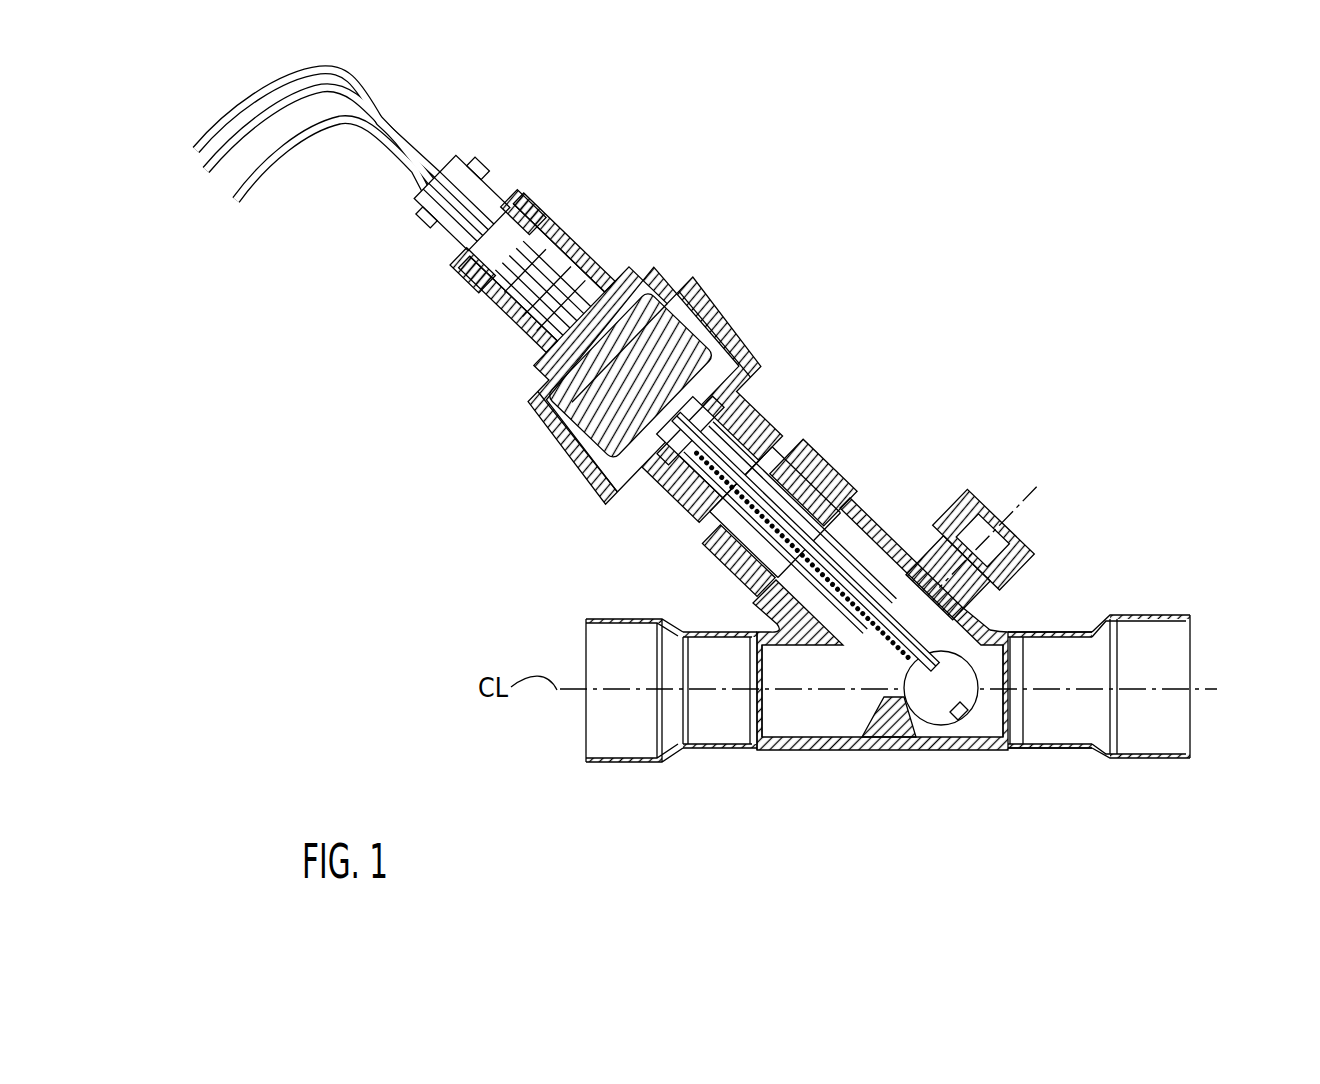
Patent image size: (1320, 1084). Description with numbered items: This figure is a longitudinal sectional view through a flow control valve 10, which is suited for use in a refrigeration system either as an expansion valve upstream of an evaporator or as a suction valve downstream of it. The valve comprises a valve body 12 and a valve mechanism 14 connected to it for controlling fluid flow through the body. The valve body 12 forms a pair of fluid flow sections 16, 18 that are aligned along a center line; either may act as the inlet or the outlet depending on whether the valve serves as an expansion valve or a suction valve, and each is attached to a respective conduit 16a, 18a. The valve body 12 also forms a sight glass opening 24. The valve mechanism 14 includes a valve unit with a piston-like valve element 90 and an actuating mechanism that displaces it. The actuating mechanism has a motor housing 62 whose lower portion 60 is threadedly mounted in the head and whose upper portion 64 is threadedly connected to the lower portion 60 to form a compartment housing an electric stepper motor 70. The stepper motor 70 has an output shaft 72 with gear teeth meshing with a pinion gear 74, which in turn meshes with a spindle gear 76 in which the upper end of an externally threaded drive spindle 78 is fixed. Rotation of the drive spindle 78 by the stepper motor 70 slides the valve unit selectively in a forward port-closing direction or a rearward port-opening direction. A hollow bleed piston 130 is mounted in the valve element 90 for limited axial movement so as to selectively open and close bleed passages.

The flow control valve 10 is at (868, 298).
The valve body 12 is at (895, 646).
The valve mechanism 14 is at (635, 416).
The flow section 16 is at (818, 713).
The conduit 16a is at (613, 633).
The flow section 18 is at (980, 727).
The conduit 18a is at (1175, 612).
The sight glass opening 24 is at (1030, 560).
The lower portion of motor housing 60 is at (758, 370).
The motor housing 62 is at (700, 288).
The upper portion of housing 64 is at (641, 285).
The electric stepper motor 70 is at (575, 407).
The output shaft 72 is at (605, 498).
The pinion gear 74 is at (748, 345).
The spindle gear 76 is at (672, 455).
The drive spindle 78 is at (822, 467).
The valve element 90 is at (887, 512).
The bleed piston 130 is at (860, 535).